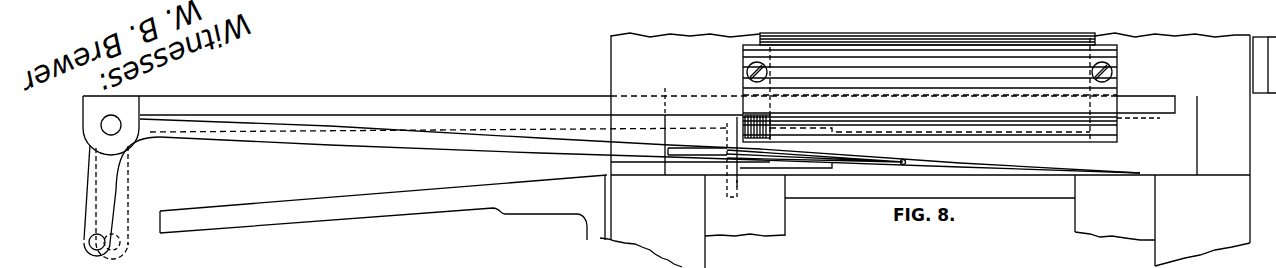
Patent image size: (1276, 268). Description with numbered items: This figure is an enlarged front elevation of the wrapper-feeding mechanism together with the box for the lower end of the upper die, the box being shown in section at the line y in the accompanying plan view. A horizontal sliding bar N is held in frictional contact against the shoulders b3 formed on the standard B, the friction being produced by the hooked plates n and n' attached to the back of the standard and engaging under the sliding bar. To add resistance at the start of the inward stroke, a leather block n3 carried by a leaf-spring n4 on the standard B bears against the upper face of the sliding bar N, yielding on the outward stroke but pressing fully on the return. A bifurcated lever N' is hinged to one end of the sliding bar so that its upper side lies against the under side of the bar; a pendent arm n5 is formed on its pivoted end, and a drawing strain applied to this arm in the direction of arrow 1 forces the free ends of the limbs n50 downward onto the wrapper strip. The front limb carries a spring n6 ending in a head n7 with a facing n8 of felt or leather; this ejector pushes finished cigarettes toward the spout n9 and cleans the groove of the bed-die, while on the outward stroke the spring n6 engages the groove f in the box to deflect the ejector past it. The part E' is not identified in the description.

The standard B is at (925, 150).
The sliding bar N is at (629, 108).
The bifurcated lever N' is at (640, 146).
The hooked plate n is at (69, 209).
The arrow 1 is at (45, 236).
The pendent arm n5 is at (121, 177).
The spout n9 is at (383, 207).
The cylinder casing E' is at (930, 87).
The shoulders b3 is at (921, 126).
The section line y is at (930, 118).
The groove f is at (1098, 118).
The limbs n50 is at (935, 166).
The spring n6 is at (798, 158).
The head n7 is at (784, 152).
The facing n8 is at (735, 170).
The block n3 is at (1261, 65).
The leaf-spring n4 is at (1251, 34).
The hooked plate n' is at (925, 263).